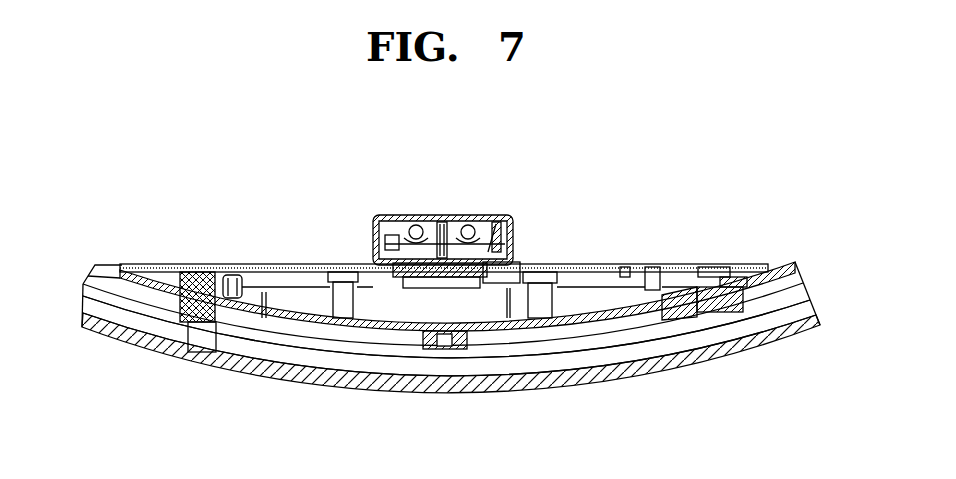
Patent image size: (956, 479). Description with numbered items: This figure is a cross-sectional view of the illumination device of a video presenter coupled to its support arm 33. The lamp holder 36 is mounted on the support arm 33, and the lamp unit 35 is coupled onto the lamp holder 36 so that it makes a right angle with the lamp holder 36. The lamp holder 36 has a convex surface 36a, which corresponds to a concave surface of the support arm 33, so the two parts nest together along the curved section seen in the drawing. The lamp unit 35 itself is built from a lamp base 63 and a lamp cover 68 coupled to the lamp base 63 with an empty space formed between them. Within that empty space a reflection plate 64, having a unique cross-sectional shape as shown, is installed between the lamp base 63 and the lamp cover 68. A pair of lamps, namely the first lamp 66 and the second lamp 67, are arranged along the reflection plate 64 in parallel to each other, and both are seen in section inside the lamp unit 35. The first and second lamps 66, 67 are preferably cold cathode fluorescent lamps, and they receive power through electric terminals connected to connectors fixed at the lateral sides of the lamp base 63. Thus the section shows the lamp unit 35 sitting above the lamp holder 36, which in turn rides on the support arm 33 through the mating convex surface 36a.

The support arm 33 is at (492, 380).
The lamp unit 35 is at (426, 220).
The lamp holder 36 is at (627, 266).
The convex surface 36a is at (400, 377).
The lamp base 63 is at (513, 250).
The reflection plate 64 is at (440, 221).
The first lamp 66 is at (416, 225).
The second lamp 67 is at (468, 225).
The lamp cover 68 is at (510, 222).